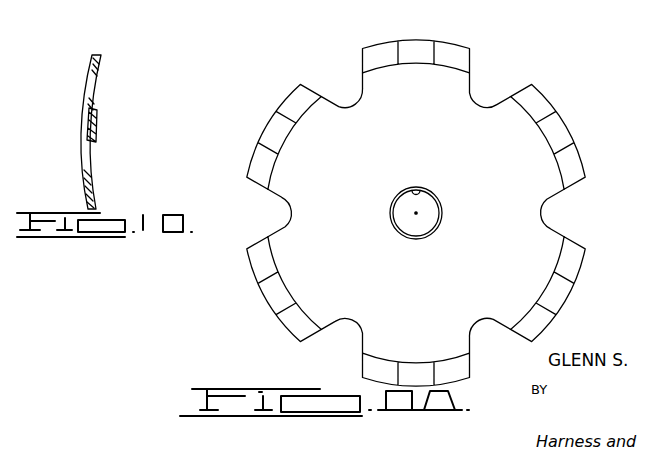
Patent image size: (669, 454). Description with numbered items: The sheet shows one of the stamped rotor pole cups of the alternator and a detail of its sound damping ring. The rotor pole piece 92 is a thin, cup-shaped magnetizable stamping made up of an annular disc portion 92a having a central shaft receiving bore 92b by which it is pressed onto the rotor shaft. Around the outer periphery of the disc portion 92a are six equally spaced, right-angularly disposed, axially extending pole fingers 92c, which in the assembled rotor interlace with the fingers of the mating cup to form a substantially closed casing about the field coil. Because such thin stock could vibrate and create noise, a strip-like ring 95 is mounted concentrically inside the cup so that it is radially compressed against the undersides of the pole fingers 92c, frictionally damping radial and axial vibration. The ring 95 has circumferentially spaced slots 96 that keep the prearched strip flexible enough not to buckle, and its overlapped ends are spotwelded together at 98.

In FIG. 10, the strip-like ring 95 is at (95, 56).
In FIG. 10, the slots 96 is at (88, 99).
In FIG. 10, the spotweld 98 is at (84, 128).
In FIG. 9a, the rotor pole piece 92 is at (413, 213).
In FIG. 9a, the annular disc portion 92a is at (497, 196).
In FIG. 9a, the central shaft receiving bore 92b is at (421, 192).
In FIG. 9a, the pole fingers 92c is at (262, 127).